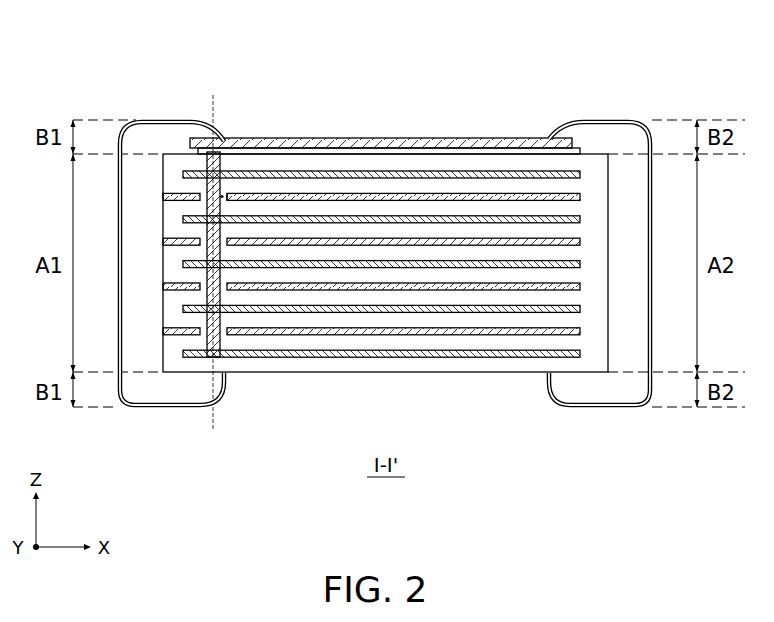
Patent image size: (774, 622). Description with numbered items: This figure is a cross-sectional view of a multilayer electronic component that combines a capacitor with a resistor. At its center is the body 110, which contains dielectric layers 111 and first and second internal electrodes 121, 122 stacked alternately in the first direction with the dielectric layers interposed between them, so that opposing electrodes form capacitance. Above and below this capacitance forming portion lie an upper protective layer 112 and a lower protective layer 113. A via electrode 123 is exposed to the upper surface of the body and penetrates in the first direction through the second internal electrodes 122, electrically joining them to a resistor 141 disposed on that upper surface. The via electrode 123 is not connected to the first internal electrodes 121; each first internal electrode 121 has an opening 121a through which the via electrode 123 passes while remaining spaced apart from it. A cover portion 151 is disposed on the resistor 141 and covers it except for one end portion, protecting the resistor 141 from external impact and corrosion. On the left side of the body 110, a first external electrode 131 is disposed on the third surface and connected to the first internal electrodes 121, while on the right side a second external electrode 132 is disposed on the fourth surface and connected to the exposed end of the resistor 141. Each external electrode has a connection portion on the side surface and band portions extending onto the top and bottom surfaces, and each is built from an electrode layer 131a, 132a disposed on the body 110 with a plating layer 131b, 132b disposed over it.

The body 110 is at (317, 152).
The dielectric layer 111 is at (465, 207).
The upper protective layer 112 is at (533, 162).
The lower protective layer 113 is at (522, 373).
The first internal electrode 121 is at (423, 195).
The opening 121a is at (222, 196).
The second internal electrode 122 is at (503, 218).
The via electrode 123 is at (212, 182).
The first external electrode 131 is at (148, 208).
The electrode layer 131a is at (172, 229).
The plating layer 131b is at (158, 119).
The second external electrode 132 is at (623, 208).
The electrode layer 132a is at (599, 229).
The plating layer 132b is at (614, 120).
The resistor 141 is at (356, 141).
The cover portion 151 is at (390, 151).